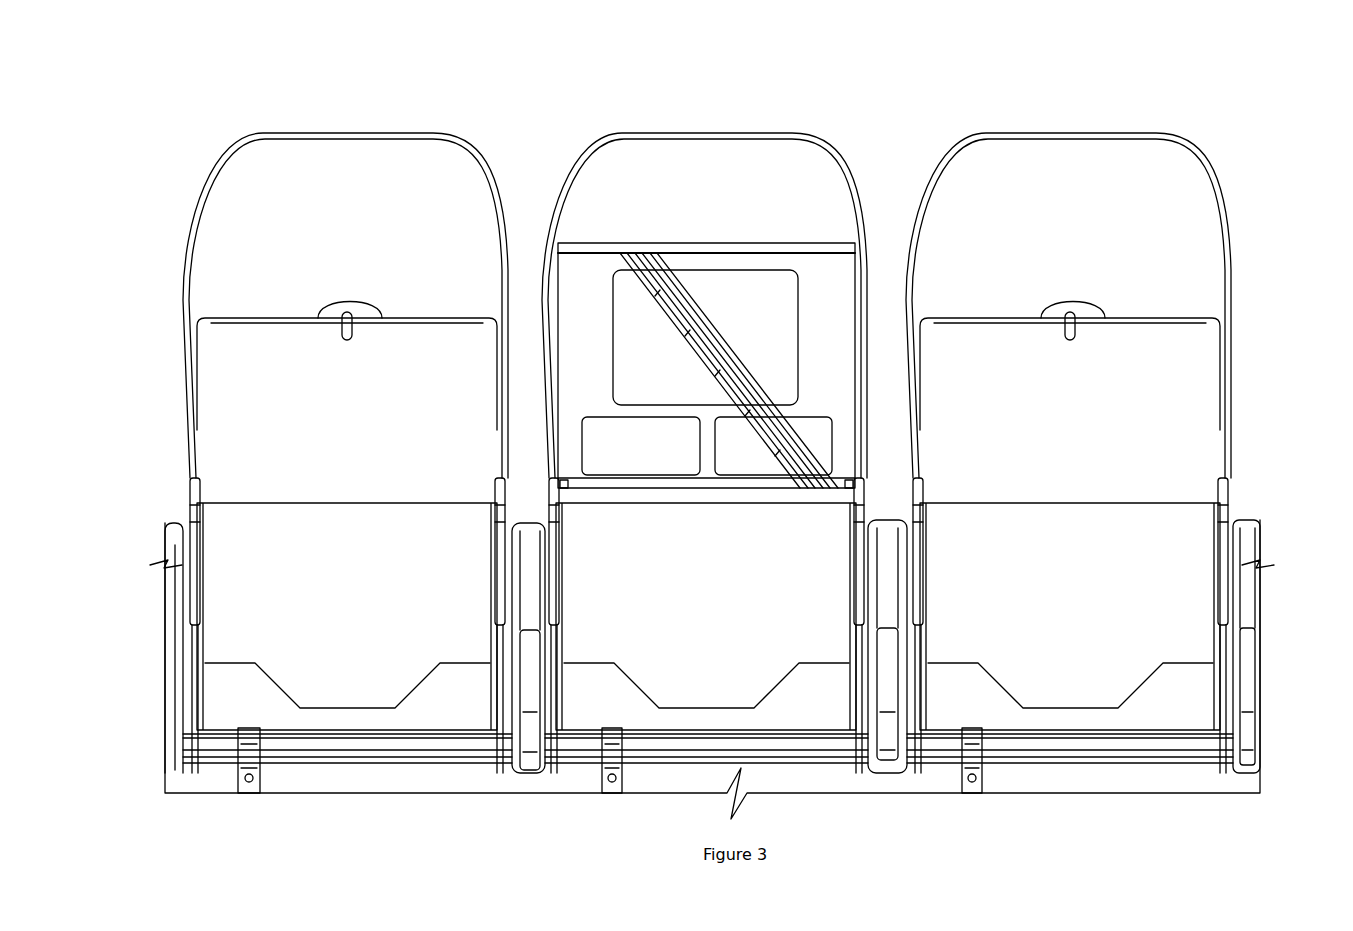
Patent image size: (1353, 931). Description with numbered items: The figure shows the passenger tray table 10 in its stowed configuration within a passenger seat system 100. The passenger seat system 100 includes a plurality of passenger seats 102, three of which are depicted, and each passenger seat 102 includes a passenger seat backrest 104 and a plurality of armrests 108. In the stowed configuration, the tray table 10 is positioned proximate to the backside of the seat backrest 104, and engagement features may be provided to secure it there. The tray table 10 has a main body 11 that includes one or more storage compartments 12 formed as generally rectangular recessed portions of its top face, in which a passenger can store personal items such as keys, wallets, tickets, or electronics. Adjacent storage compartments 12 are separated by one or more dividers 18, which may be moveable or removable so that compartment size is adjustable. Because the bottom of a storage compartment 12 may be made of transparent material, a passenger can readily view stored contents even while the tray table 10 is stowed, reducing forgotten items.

The passenger seat system 100 is at (1120, 65).
The passenger seat 102 is at (256, 122).
The passenger seat backrest 104 is at (190, 230).
The armrest 108 is at (528, 522).
The passenger tray table 10 is at (647, 370).
The main body 11 is at (754, 215).
The storage compartment 12 is at (688, 268).
The divider 18 is at (700, 444).